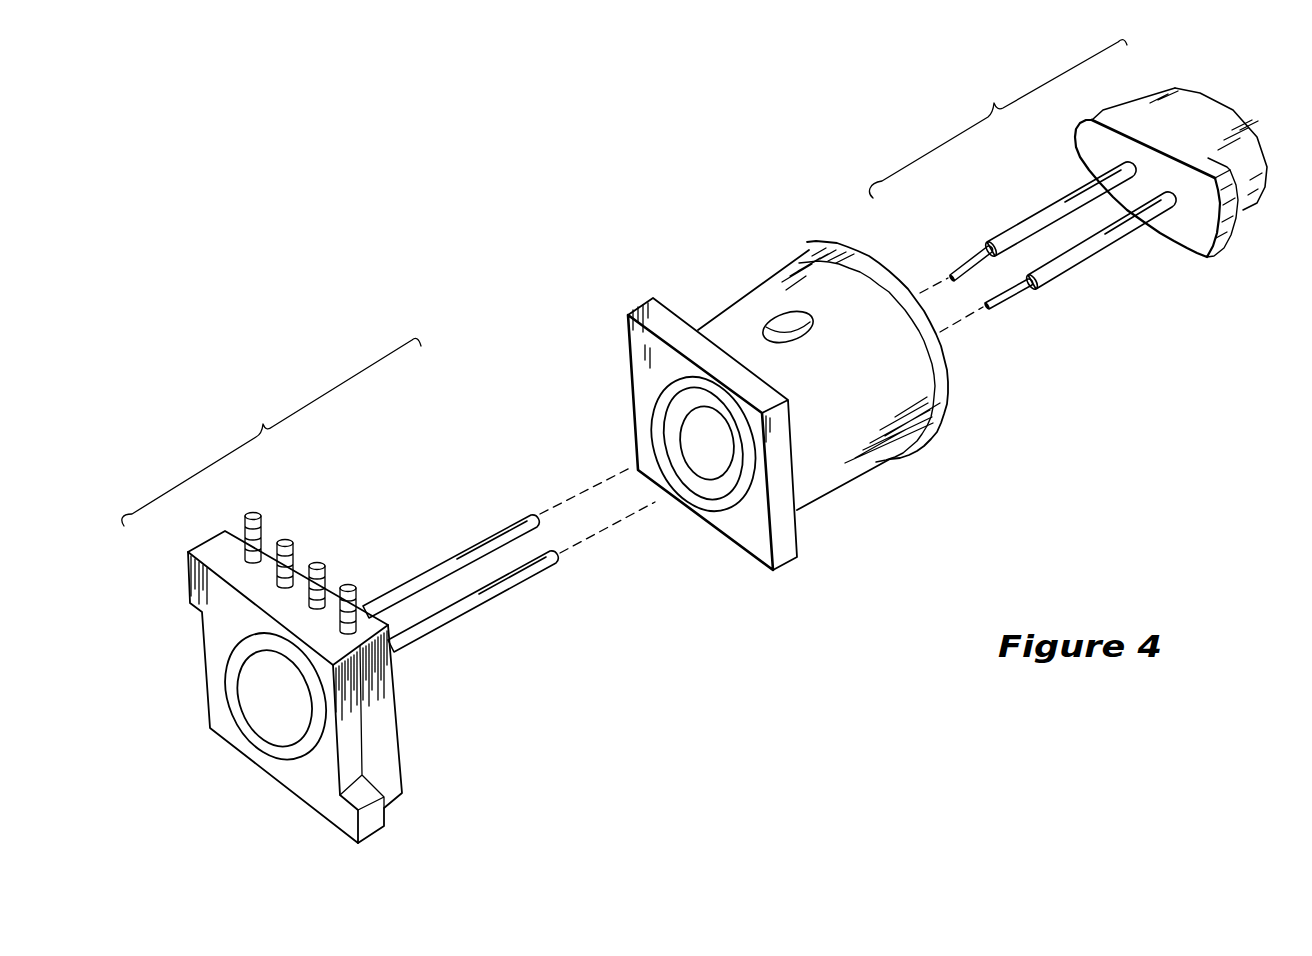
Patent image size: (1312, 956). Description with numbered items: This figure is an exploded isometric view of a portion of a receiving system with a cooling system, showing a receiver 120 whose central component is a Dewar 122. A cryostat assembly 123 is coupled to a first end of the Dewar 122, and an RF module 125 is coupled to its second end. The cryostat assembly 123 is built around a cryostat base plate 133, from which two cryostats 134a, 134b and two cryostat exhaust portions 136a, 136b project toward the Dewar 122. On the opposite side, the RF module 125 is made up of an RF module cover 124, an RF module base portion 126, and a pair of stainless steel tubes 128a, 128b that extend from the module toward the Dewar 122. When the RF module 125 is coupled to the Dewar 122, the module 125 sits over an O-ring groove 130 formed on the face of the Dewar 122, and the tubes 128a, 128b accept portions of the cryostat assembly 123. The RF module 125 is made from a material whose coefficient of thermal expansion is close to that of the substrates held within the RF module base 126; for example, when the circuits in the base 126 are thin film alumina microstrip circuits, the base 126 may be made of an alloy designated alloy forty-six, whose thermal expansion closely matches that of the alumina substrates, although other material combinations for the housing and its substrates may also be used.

The receiver 120 is at (590, 293).
The Dewar 122 is at (723, 272).
The cryostat assembly 123 is at (998, 119).
The RF module cover 124 is at (198, 550).
The RF module 125 is at (271, 432).
The RF module base portion 126 is at (220, 542).
The stainless steel tube 128a is at (422, 573).
The stainless steel tube 128b is at (440, 628).
The O-ring groove 130 is at (656, 403).
The cryostat base plate 133 is at (1198, 122).
The cryostat 134a is at (1037, 210).
The cryostat 134b is at (1100, 253).
The cryostat exhaust portion 136a is at (958, 268).
The cryostat exhaust portion 136b is at (1010, 298).